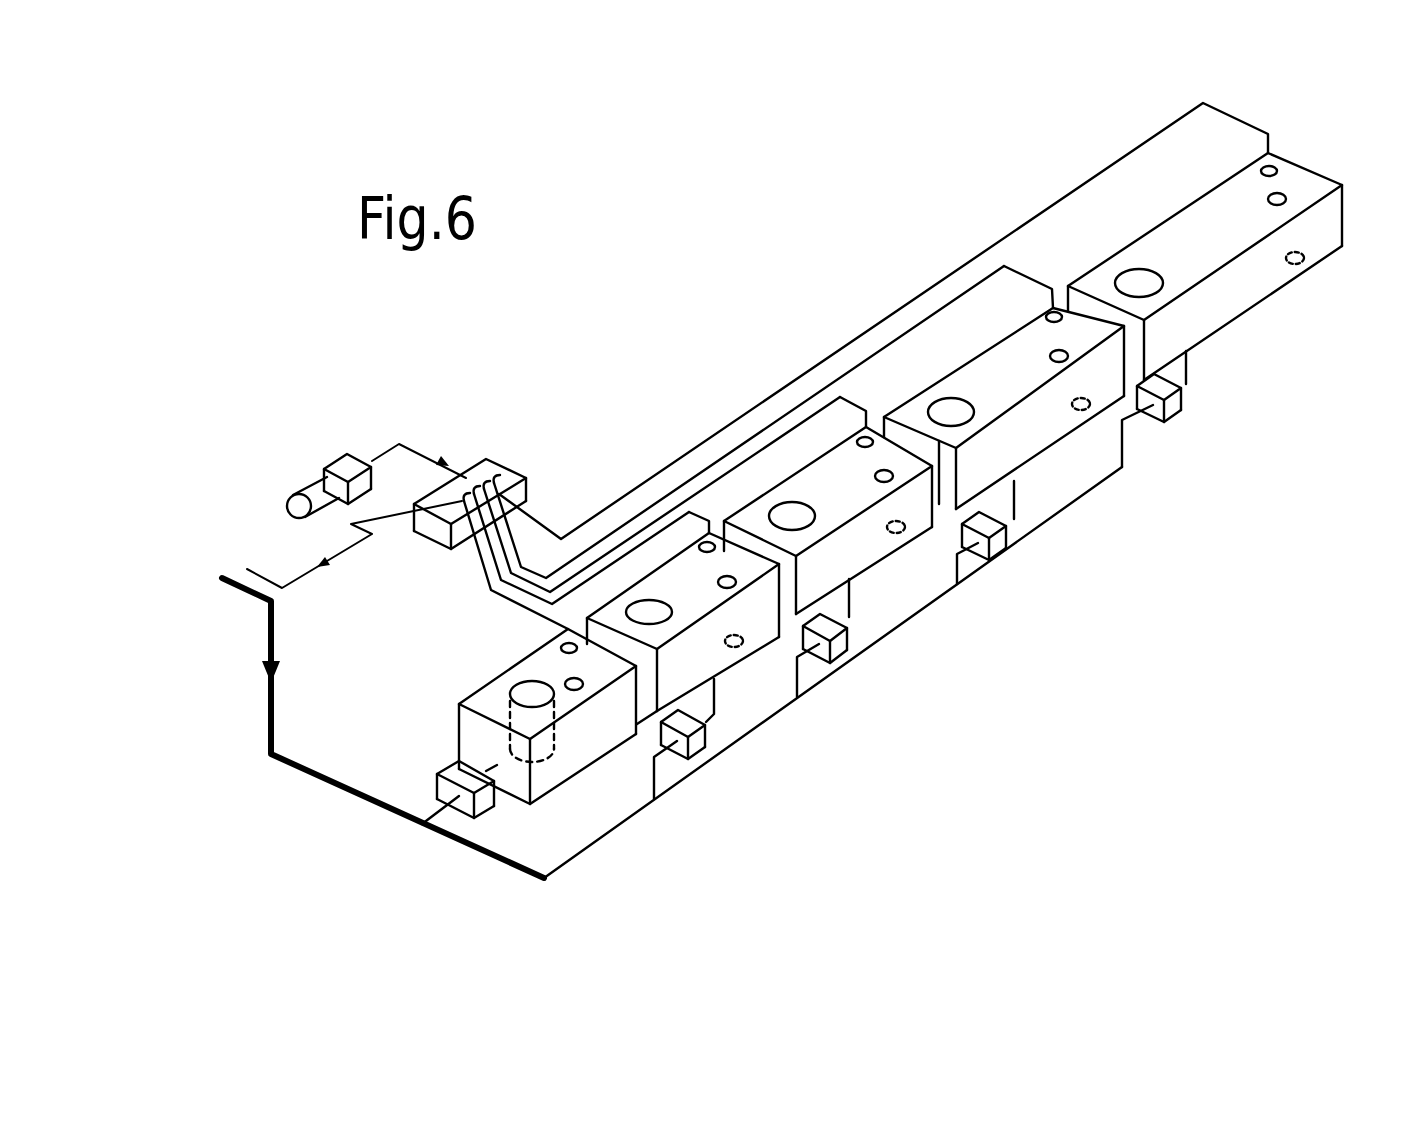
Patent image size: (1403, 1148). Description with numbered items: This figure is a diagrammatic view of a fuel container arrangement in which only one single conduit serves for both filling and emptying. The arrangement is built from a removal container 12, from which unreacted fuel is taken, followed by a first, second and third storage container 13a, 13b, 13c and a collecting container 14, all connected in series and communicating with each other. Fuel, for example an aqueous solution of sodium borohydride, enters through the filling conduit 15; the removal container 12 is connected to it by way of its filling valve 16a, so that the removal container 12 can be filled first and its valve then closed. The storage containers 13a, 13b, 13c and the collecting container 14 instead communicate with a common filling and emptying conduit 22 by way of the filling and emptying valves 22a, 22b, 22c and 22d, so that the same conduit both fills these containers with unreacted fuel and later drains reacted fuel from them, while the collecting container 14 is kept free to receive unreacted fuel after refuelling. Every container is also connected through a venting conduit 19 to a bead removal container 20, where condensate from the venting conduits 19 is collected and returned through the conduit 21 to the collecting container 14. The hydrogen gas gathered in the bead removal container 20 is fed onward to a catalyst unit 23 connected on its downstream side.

The removal container 12 is at (547, 777).
The first storage container 13a is at (727, 650).
The second storage container 13b is at (868, 553).
The third storage container 13c is at (1037, 438).
The collecting container 14 is at (1247, 292).
The filling conduit 15 is at (347, 790).
The filling valve 16a is at (463, 812).
The venting conduit 19 is at (494, 592).
The bead removal container 20 is at (497, 470).
The conduit 21 is at (1249, 119).
The common filling and emptying conduit 22 is at (813, 697).
The filling and emptying valve 22a is at (703, 760).
The filling and emptying valve 22b is at (849, 660).
The filling and emptying valve 22c is at (1006, 550).
The filling and emptying valve 22d is at (1180, 425).
The catalyst unit 23 is at (318, 493).